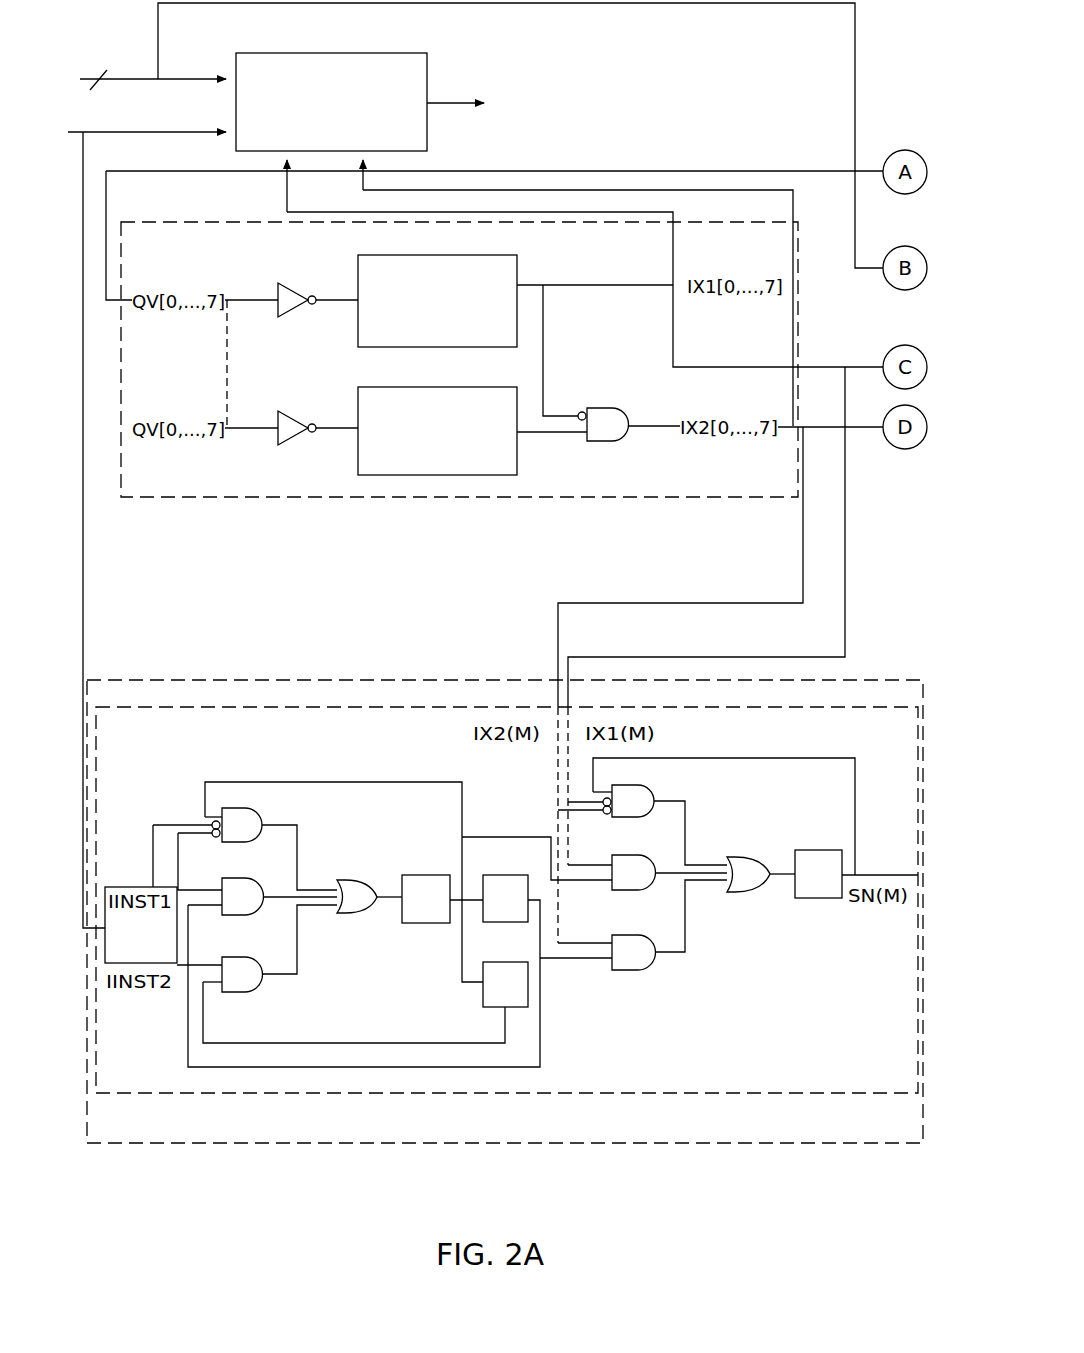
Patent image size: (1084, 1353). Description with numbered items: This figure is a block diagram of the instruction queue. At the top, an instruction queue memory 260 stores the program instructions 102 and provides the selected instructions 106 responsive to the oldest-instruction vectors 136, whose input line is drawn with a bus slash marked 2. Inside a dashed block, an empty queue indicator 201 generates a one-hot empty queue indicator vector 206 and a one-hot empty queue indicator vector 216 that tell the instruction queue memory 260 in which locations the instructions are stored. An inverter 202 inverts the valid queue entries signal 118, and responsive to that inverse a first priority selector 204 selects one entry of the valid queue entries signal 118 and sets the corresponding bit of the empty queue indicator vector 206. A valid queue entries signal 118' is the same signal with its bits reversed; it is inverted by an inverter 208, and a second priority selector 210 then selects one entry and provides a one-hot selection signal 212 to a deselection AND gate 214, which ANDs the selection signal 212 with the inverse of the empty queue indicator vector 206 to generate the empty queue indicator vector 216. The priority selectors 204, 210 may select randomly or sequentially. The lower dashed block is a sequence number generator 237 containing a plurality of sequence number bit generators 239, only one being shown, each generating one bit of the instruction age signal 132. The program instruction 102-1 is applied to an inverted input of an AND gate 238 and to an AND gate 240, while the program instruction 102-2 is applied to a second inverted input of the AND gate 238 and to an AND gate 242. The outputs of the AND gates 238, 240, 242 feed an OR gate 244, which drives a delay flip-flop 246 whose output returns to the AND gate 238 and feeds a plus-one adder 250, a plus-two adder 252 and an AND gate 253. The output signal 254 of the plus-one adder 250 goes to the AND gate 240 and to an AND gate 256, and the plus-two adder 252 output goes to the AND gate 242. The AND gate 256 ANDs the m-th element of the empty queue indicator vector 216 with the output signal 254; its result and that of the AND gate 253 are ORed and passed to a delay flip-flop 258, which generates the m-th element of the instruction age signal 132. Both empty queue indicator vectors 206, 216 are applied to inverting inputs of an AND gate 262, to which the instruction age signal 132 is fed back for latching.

The bus width indicator 2 is at (91, 92).
The oldest-instruction vectors 136 is at (115, 78).
The program instructions 102 is at (188, 133).
The instruction queue memory 260 is at (365, 52).
The selected instructions 106 is at (457, 107).
The valid queue entries signal 118 is at (483, 247).
The reversed valid queue entries signal 118' is at (285, 455).
The empty queue indicator 201 is at (193, 222).
The inverter 202 is at (290, 282).
The first priority selector 204 is at (438, 254).
The inverter 208 is at (290, 411).
The deselection AND gate 214 is at (438, 386).
The second priority selector 210 is at (595, 406).
The selection signal 212 is at (543, 433).
The empty queue indicator vector 206 is at (865, 363).
The empty queue indicator vector 216 is at (855, 430).
The sequence number generator 237 is at (280, 1145).
The sequence number bit generator 239 is at (512, 1097).
The program instruction 102-1 is at (137, 887).
The program instruction 102-2 is at (170, 963).
The AND gate 238 is at (245, 807).
The AND gate 240 is at (245, 878).
The AND gate 242 is at (230, 957).
The OR gate 244 is at (363, 880).
The delay flip-flop 246 is at (432, 875).
The plus-one adder 250 is at (522, 925).
The plus-two adder 252 is at (493, 1007).
The output signal 254 is at (542, 1017).
The AND gate 262 is at (637, 785).
The AND gate 253 is at (630, 855).
The AND gate 256 is at (620, 935).
The delay flip-flop 258 is at (820, 850).
The instruction age signal 132 is at (860, 873).